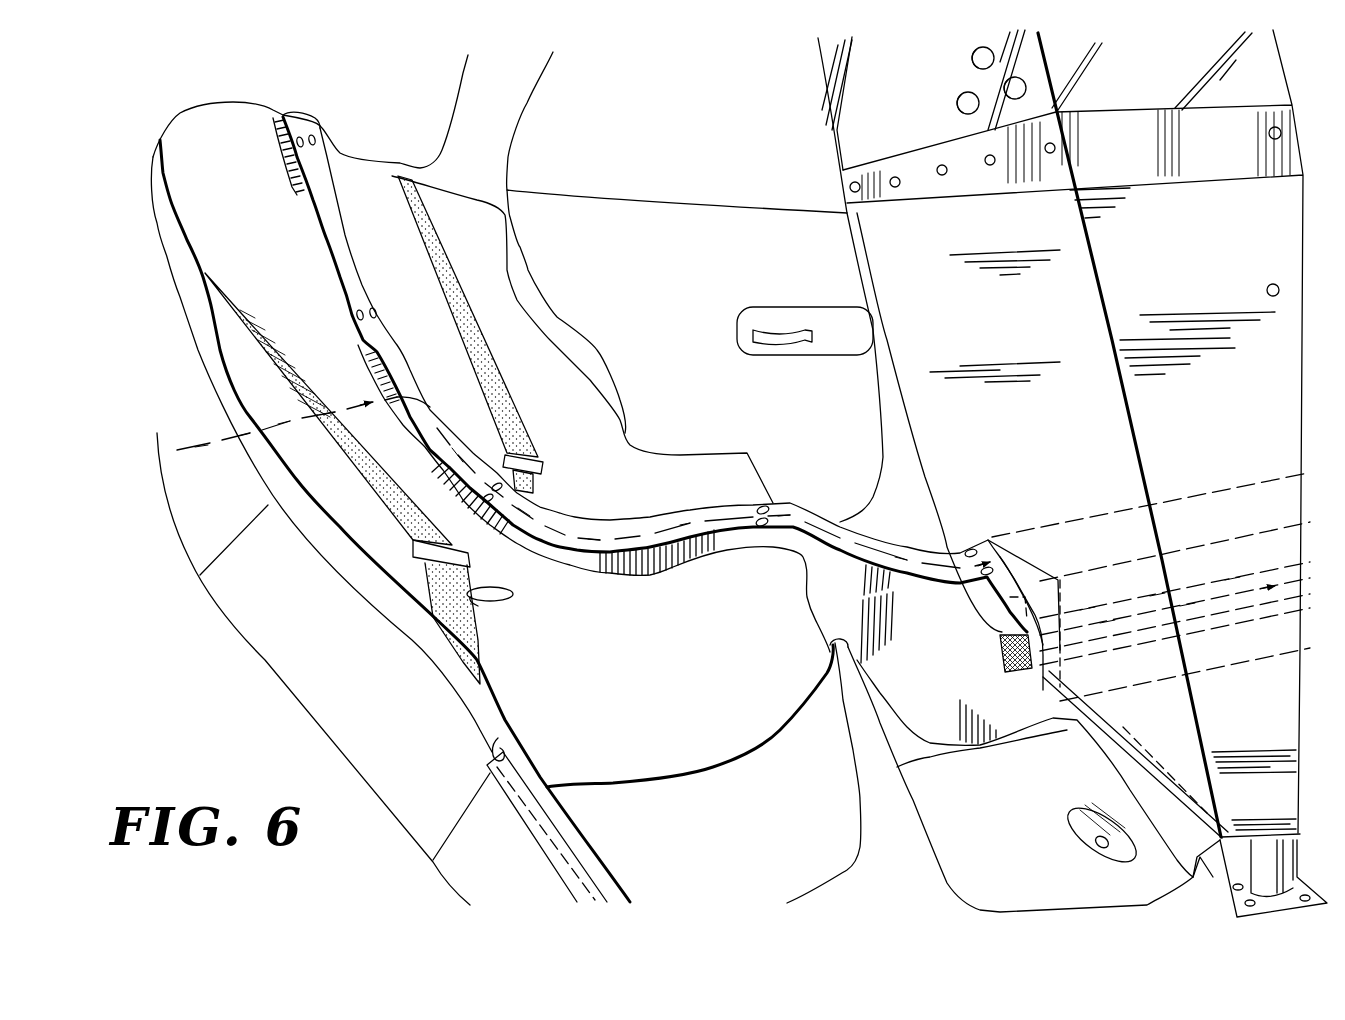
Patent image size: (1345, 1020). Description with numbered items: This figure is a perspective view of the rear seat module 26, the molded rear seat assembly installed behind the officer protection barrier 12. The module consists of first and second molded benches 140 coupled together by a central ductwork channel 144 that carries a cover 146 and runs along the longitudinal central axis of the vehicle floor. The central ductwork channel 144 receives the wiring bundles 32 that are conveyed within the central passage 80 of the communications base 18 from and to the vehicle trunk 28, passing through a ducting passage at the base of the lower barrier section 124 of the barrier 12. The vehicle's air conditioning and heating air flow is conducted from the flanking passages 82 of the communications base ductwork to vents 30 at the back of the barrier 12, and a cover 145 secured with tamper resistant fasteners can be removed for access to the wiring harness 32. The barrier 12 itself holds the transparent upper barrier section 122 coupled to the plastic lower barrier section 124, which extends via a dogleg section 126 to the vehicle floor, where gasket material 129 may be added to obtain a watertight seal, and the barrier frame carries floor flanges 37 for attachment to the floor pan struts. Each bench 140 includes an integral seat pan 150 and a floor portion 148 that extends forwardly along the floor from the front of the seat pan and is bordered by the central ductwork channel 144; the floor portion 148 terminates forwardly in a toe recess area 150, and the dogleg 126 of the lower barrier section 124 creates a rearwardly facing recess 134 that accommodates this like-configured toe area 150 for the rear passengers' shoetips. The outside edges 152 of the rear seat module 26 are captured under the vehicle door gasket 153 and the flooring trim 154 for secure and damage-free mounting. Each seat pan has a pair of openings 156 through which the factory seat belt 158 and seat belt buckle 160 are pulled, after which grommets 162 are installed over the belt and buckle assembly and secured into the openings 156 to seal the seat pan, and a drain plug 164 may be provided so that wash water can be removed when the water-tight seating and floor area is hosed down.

The officer protection barrier 12 is at (866, 140).
The communications base 18 is at (1232, 510).
The rear seat module 26 is at (500, 302).
The vehicle trunk 28 is at (267, 380).
The vents 30 is at (1023, 673).
The wiring bundles 32 is at (355, 400).
The floor flanges 37 is at (1310, 880).
The central passage 80 is at (1040, 620).
The flanking passages 82 is at (1117, 648).
The upper barrier section 122 is at (1073, 431).
The lower barrier section 124 is at (910, 275).
The dogleg section 126 is at (1168, 758).
The gasket material 129 is at (960, 100).
The rearwardly facing recess 134 is at (1127, 723).
The molded benches 140 is at (609, 624).
The central ductwork channel 144 is at (723, 533).
The cover 145 is at (928, 654).
The cover 146 is at (801, 515).
The floor portion 148 is at (998, 835).
The seat pan 150 is at (658, 513).
The outside edges 152 is at (493, 728).
The vehicle door gasket 153 is at (500, 743).
The flooring trim 154 is at (540, 848).
The openings 156 is at (510, 600).
The seat belt 158 is at (467, 355).
The seat belt buckle 160 is at (545, 466).
The grommets 162 is at (508, 592).
The drain plug 164 is at (1087, 847).